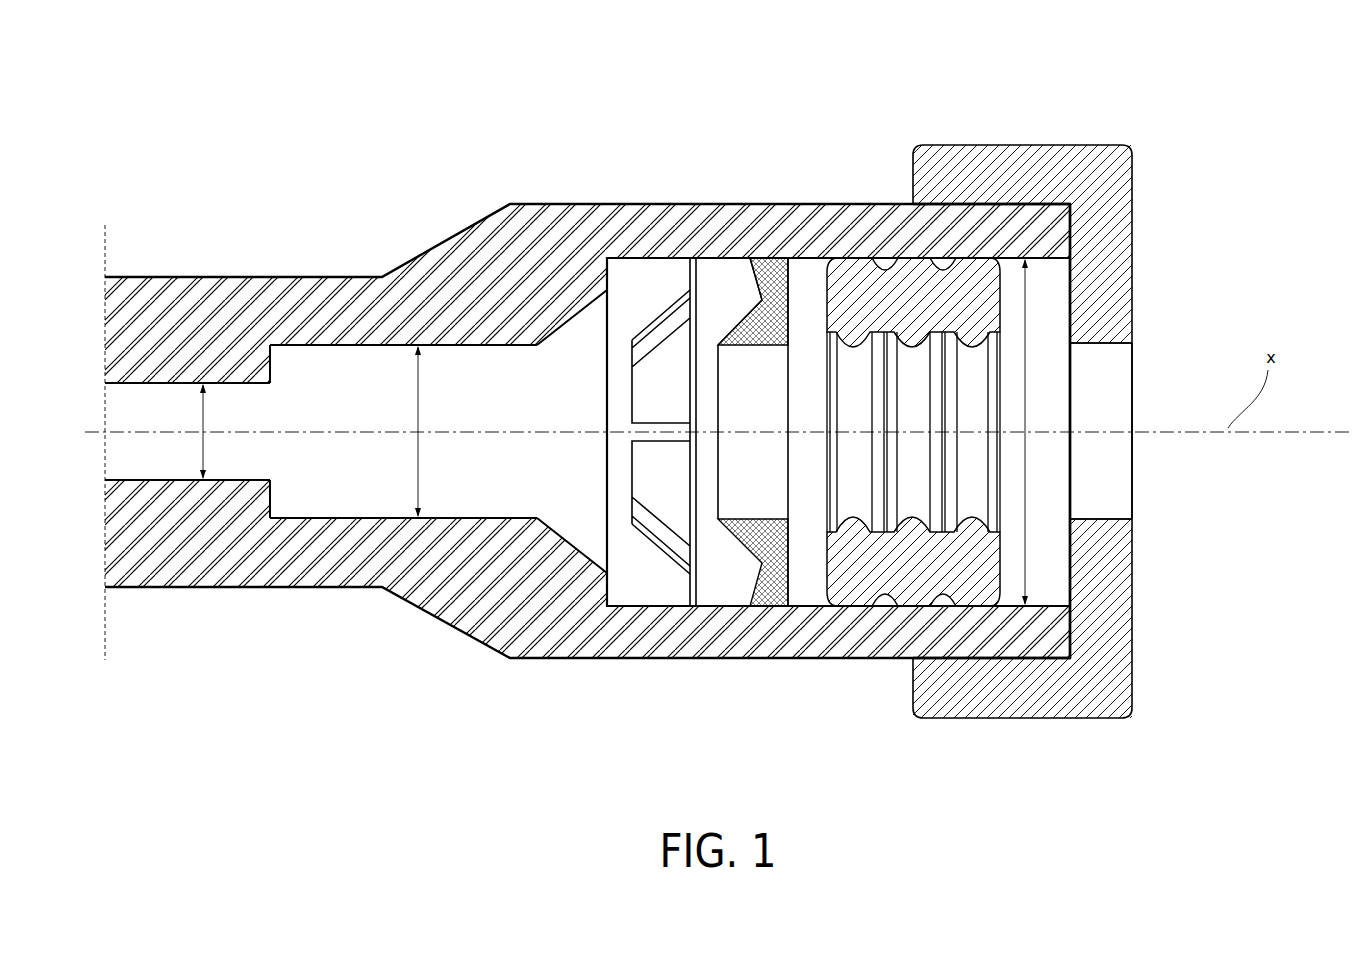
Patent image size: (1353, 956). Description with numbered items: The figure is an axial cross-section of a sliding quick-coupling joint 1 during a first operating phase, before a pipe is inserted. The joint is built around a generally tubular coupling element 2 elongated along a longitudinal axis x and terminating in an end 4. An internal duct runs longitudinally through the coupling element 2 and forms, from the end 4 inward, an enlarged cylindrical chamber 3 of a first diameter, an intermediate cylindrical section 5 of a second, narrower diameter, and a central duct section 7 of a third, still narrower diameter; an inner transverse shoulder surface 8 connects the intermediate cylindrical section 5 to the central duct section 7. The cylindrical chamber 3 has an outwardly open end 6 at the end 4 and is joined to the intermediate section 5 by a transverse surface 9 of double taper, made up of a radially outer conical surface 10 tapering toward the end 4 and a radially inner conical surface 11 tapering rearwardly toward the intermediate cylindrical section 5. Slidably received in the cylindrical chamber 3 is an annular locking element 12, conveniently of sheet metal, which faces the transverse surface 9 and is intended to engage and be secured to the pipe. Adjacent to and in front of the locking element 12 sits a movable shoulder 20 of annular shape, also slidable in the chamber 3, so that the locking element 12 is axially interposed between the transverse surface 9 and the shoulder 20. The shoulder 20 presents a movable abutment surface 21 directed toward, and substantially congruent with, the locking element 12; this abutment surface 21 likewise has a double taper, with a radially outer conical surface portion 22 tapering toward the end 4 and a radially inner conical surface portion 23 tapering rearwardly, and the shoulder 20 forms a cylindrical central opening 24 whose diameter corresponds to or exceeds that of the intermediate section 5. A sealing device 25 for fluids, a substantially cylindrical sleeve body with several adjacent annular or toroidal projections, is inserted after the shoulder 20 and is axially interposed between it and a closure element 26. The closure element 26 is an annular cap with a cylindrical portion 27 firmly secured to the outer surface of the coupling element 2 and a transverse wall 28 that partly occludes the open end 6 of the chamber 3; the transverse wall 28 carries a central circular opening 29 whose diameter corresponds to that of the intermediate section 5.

The sliding quick-coupling joint 1 is at (456, 176).
The coupling element 2 is at (588, 394).
The cylindrical chamber 3 is at (1076, 468).
The end 4 is at (1028, 220).
The intermediate cylindrical section 5 is at (350, 370).
The outwardly open end 6 is at (1075, 272).
The central duct section 7 is at (183, 390).
The inner transverse shoulder surface 8 is at (278, 365).
The transverse surface 9 is at (567, 528).
The radially outer conical surface 10 is at (654, 416).
The radially inner conical surface 11 is at (608, 313).
The annular locking element 12 is at (672, 603).
The movable shoulder 20 is at (764, 412).
The movable abutment surface 21 is at (725, 597).
The radially outer conical surface portion 22 is at (758, 287).
The radially inner conical surface portion 23 is at (733, 323).
The cylindrical central opening 24 is at (768, 347).
The sealing device 25 is at (932, 590).
The closure element 26 is at (1109, 588).
The cylindrical portion 27 is at (982, 217).
The transverse wall 28 is at (1075, 318).
The central circular opening 29 is at (1105, 516).